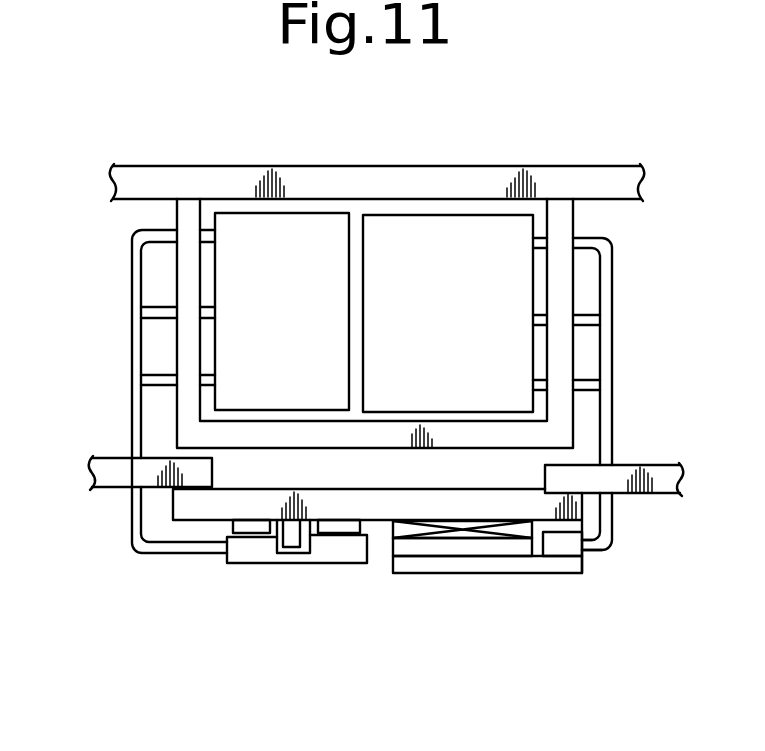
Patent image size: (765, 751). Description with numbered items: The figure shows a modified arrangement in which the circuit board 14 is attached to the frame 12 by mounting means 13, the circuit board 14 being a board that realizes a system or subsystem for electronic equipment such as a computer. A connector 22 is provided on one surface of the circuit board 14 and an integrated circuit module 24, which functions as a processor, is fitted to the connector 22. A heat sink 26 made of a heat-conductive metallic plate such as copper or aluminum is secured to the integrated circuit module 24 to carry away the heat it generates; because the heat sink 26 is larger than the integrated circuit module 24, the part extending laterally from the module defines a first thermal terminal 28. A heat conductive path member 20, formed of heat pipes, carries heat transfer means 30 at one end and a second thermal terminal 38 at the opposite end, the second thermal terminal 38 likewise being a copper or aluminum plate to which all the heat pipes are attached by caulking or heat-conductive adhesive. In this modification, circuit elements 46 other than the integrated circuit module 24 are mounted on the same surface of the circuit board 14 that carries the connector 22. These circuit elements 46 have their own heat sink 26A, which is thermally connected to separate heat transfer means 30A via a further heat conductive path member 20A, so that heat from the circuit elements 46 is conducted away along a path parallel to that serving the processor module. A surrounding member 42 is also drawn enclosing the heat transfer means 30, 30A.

The frame 12 is at (418, 178).
The mounting means 13 is at (105, 478).
The circuit board 14 is at (383, 510).
The heat conductive path member 20 is at (607, 357).
The heat conductive path member 20A is at (132, 360).
The connector 22 is at (427, 532).
The integrated circuit module 24 is at (473, 550).
The heat sink 26 is at (512, 568).
The heat sink 26A is at (348, 555).
The first thermal terminal 28 is at (560, 577).
The heat transfer means 30 is at (490, 232).
The heat transfer means 30A is at (290, 233).
The second thermal terminal 38 is at (572, 548).
The holder frame 42 is at (183, 225).
The circuit elements 46 is at (332, 530).